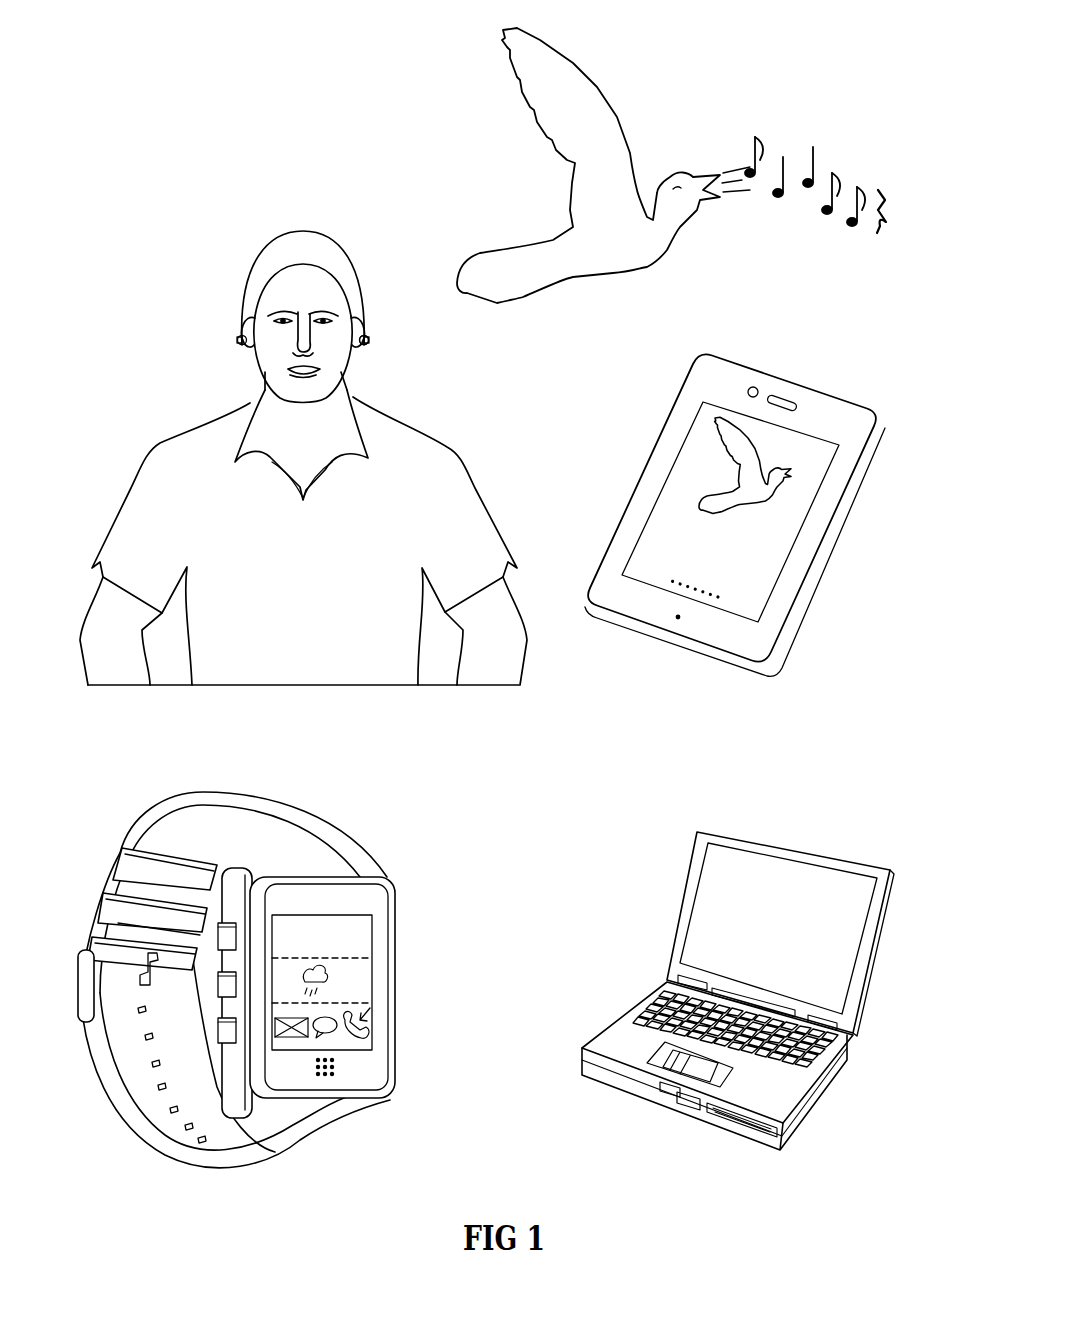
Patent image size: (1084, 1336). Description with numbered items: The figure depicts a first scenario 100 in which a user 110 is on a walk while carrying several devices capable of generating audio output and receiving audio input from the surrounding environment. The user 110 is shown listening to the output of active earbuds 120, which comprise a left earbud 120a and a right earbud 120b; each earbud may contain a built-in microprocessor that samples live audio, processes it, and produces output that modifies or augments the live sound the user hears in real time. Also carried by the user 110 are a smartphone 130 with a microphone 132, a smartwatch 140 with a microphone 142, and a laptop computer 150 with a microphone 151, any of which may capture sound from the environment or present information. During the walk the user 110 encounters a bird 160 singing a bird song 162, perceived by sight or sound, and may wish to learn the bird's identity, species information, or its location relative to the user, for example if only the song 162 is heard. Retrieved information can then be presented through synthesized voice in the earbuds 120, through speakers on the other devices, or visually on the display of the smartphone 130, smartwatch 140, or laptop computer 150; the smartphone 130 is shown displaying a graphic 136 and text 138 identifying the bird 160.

The first scenario 100 is at (210, 61).
The user 110 is at (303, 231).
The active earbuds 120 is at (383, 343).
The left earbud 120a is at (373, 327).
The right earbud 120b is at (233, 327).
The smartphone 130 is at (790, 377).
The microphone 132 is at (678, 620).
The image 136 is at (780, 497).
The text 138 is at (760, 577).
The smartwatch 140 is at (297, 807).
The microphone 142 is at (338, 1069).
The laptop computer 150 is at (857, 862).
The microphone 151 is at (683, 1080).
The bird 160 is at (622, 127).
The bird song 162 is at (840, 148).